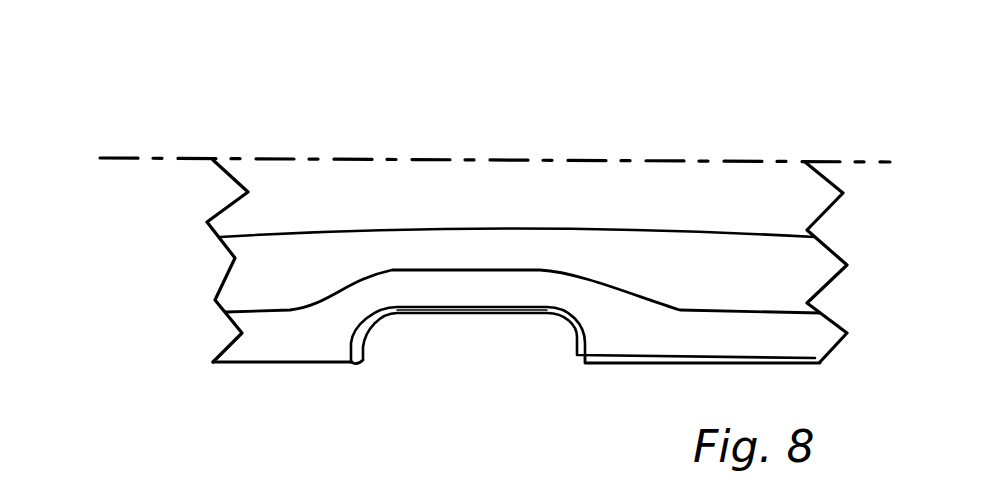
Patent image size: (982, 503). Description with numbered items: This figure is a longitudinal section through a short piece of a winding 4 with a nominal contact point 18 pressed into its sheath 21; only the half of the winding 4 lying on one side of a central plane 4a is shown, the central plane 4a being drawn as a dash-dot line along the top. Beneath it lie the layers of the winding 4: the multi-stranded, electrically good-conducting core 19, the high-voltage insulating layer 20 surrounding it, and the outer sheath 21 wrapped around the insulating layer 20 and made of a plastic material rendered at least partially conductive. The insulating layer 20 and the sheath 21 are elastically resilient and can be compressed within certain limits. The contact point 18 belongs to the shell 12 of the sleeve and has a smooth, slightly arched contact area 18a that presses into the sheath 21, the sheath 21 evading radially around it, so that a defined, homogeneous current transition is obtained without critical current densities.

The central plane 4a is at (115, 157).
The winding 4 is at (193, 307).
The core 19 is at (250, 220).
The insulating layer 20 is at (260, 263).
The sheath 21 is at (278, 340).
The contact point 18 is at (578, 338).
The contact area 18a is at (460, 312).
The shell 12 is at (642, 362).